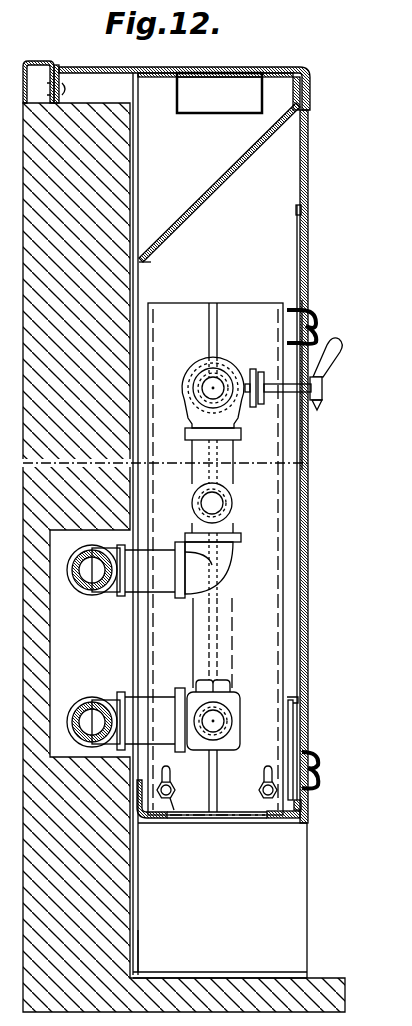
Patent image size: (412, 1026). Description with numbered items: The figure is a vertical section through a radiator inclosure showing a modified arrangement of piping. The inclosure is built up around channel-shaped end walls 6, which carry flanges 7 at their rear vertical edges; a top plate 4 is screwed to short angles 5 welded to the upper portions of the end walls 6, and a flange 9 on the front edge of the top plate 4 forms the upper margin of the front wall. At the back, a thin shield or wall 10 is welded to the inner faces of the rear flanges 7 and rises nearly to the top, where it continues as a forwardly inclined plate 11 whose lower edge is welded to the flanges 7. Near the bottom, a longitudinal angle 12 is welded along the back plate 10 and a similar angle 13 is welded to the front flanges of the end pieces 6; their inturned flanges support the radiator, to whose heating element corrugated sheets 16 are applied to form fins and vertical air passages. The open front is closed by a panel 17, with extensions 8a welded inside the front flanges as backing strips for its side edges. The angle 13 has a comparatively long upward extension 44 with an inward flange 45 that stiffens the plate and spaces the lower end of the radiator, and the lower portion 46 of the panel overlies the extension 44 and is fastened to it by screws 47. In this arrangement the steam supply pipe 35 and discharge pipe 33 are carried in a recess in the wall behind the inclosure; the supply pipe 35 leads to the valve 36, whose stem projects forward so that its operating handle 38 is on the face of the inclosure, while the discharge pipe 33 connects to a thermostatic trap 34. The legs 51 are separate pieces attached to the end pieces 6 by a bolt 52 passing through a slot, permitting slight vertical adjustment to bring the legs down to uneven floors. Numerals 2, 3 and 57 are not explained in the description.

The wall 2 is at (117, 166).
The cap flashing 3 is at (45, 55).
The top plate 4 is at (265, 70).
The short angles 5 is at (219, 93).
The end walls 6 is at (292, 733).
The rear flanges 7 is at (138, 203).
The extensions 8a is at (298, 228).
The flange 9 is at (310, 96).
The shield or wall 10 is at (138, 928).
The forwardly inclined plate 11 is at (215, 190).
The longitudinal angle 12 is at (152, 828).
The angle 13 is at (286, 820).
The corrugated sheets 16 is at (230, 626).
The panel 17 is at (306, 453).
The discharge pipe 33 is at (85, 700).
The trap 34 is at (258, 684).
The steam supply pipe 35 is at (95, 594).
The valve 36 is at (198, 366).
The operating handle 38 is at (336, 338).
The upward extension 44 is at (290, 748).
The inward flange 45 is at (288, 702).
The lower portion 46 is at (309, 814).
The screws 47 is at (308, 803).
The legs 51 is at (202, 890).
The bolt 52 is at (172, 826).
The valve stem 57 is at (275, 372).